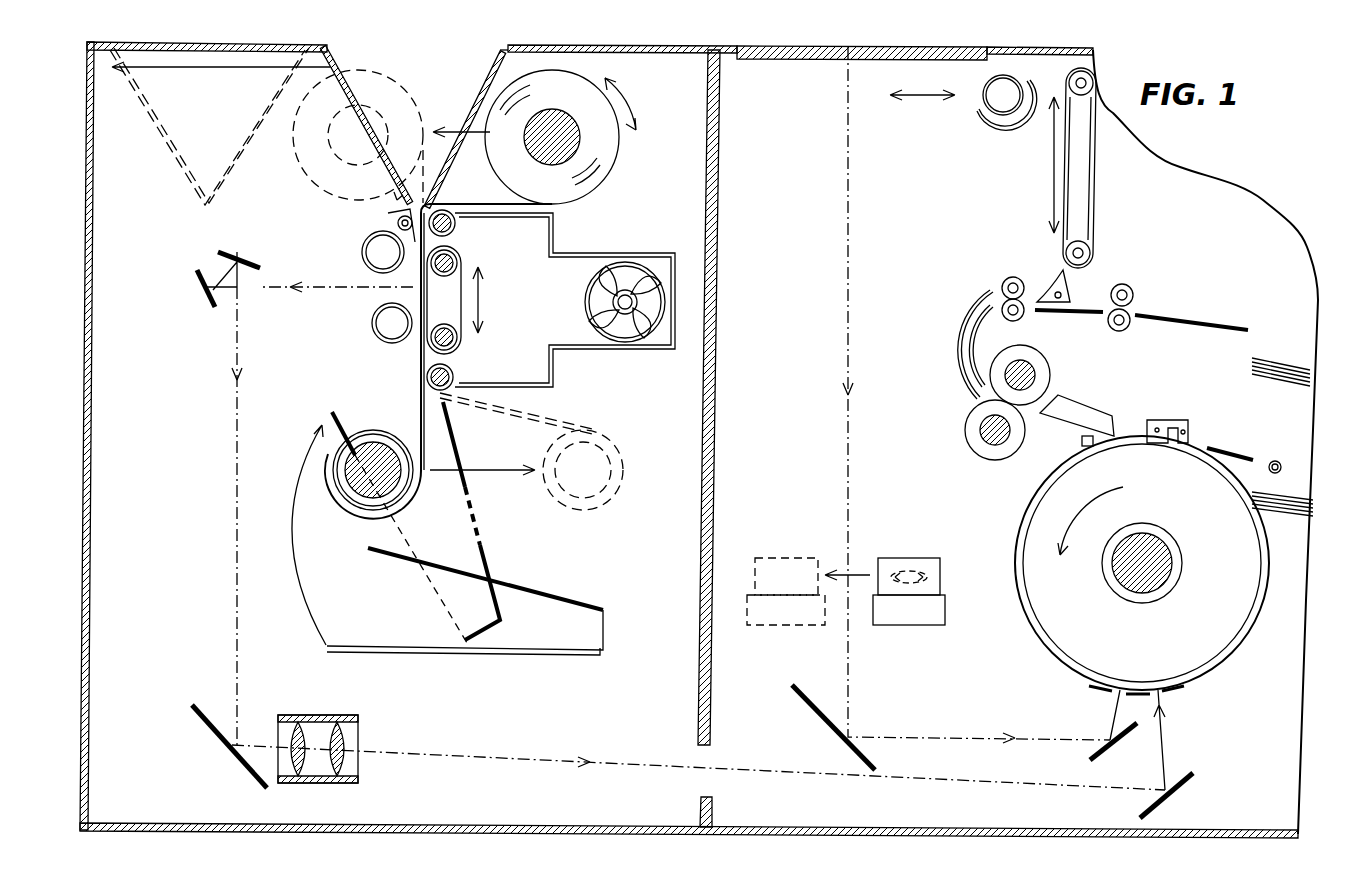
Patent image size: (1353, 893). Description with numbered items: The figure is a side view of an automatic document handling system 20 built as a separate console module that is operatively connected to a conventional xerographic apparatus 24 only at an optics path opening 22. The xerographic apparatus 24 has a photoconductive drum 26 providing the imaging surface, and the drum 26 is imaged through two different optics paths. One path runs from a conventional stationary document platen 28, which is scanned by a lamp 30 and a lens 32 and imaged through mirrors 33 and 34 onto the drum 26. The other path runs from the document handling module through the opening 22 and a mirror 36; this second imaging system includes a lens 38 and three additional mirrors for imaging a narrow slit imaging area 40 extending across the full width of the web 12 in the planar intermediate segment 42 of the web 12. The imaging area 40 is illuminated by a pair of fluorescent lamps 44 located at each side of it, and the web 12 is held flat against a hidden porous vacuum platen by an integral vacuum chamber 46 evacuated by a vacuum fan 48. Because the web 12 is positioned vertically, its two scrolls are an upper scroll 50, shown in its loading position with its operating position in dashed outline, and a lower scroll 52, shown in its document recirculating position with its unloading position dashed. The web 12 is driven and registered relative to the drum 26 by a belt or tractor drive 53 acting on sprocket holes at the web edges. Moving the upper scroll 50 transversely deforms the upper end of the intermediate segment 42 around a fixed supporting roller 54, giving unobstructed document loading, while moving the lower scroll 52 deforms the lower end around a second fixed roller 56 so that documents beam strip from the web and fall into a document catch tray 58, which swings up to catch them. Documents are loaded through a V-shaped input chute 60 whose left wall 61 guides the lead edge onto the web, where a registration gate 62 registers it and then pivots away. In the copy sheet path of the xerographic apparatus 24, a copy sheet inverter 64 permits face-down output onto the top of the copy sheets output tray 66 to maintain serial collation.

The web 12 is at (420, 415).
The automatic document handling system 20 is at (553, 45).
The optics path opening 22 is at (682, 783).
The xerographic apparatus 24 is at (1045, 35).
The photoconductive drum 26 is at (1030, 490).
The stationary document platen 28 is at (815, 45).
The lamp 30 is at (985, 100).
The lens 32 is at (920, 556).
The mirror 33 is at (800, 700).
The mirror 34 is at (1138, 745).
The mirror 36 is at (1185, 790).
The lens 38 is at (315, 715).
The imaging area 40 is at (378, 298).
The intermediate segment 42 is at (418, 392).
The fluorescent lamps 44 is at (360, 247).
The vacuum chamber 46 is at (557, 279).
The vacuum fan 48 is at (640, 270).
The upper scroll 50 is at (615, 155).
The lower scroll 52 is at (340, 480).
The web drive 53 is at (465, 333).
The fixed supporting roller 54 is at (455, 222).
The second fixed roller 56 is at (452, 376).
The document catch tray 58 is at (545, 585).
The V-shaped input chute 60 is at (487, 60).
The left wall 61 is at (338, 50).
The registration gate 62 is at (398, 224).
The copy sheet inverter 64 is at (1042, 170).
The copy sheets output tray 66 is at (1268, 372).